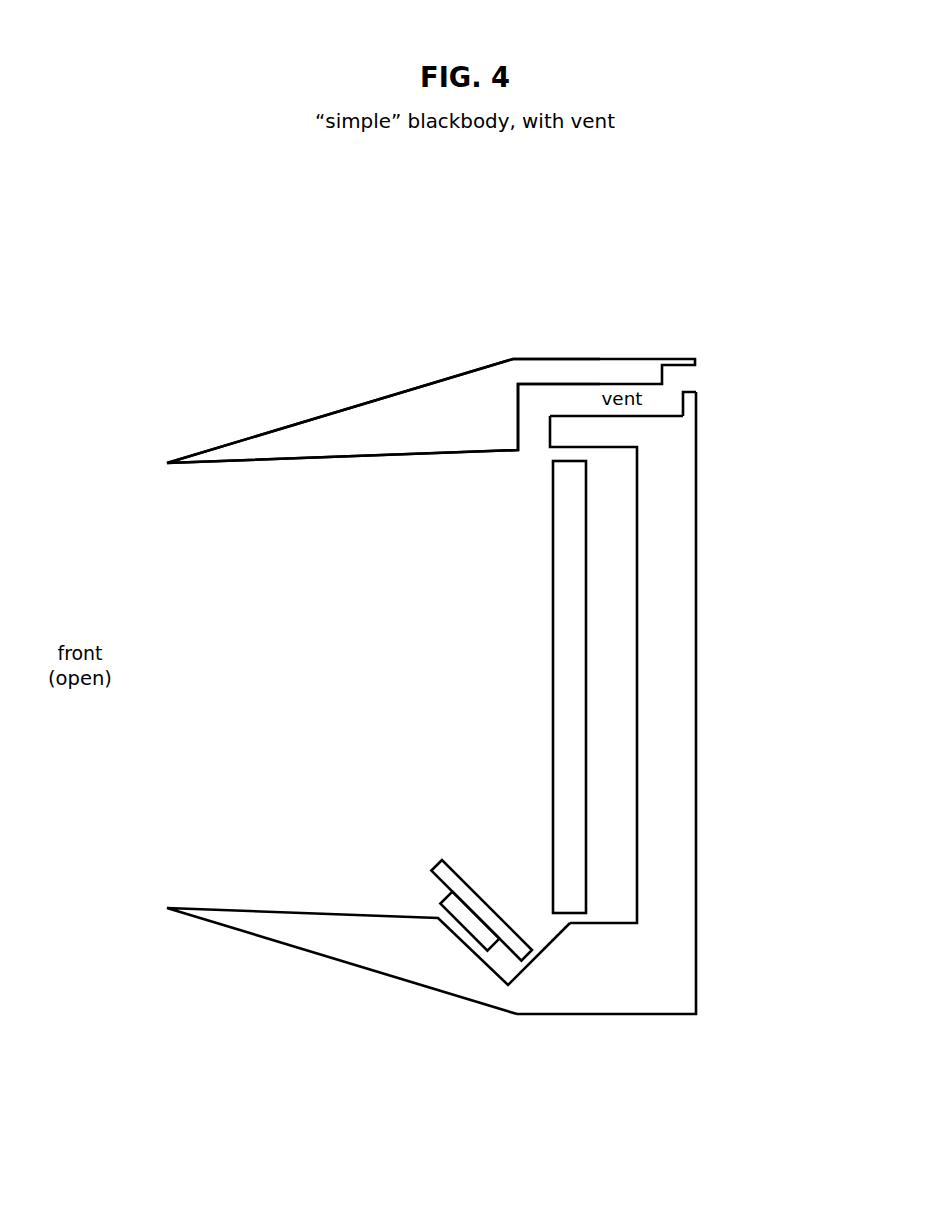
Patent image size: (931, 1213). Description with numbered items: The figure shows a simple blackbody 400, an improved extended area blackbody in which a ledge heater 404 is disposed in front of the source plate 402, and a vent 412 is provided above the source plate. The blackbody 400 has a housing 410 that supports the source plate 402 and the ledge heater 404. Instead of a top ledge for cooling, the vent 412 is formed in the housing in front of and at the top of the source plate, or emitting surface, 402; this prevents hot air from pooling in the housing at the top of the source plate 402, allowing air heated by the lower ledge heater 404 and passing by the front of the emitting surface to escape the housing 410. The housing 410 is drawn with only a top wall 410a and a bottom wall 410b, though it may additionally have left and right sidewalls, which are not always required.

The simple blackbody 400 is at (597, 322).
The source plate 402 is at (545, 710).
The ledge heater 404 is at (432, 860).
The housing 410 is at (697, 730).
The top wall 410a is at (368, 392).
The bottom wall 410b is at (438, 1008).
The vent 412 is at (690, 377).